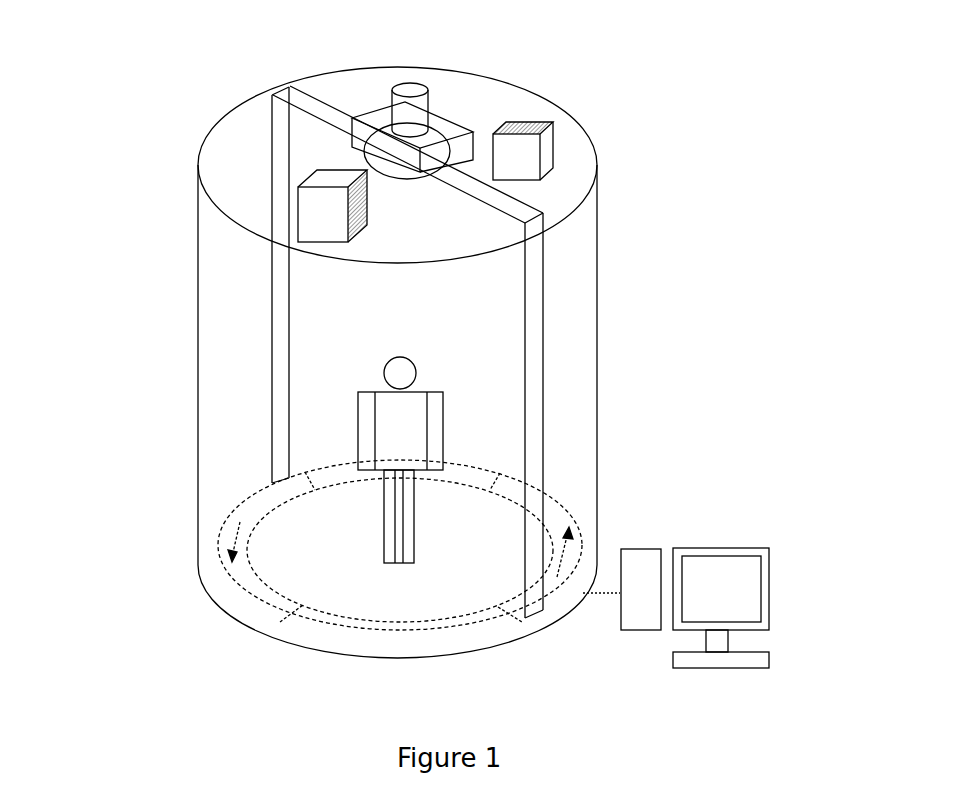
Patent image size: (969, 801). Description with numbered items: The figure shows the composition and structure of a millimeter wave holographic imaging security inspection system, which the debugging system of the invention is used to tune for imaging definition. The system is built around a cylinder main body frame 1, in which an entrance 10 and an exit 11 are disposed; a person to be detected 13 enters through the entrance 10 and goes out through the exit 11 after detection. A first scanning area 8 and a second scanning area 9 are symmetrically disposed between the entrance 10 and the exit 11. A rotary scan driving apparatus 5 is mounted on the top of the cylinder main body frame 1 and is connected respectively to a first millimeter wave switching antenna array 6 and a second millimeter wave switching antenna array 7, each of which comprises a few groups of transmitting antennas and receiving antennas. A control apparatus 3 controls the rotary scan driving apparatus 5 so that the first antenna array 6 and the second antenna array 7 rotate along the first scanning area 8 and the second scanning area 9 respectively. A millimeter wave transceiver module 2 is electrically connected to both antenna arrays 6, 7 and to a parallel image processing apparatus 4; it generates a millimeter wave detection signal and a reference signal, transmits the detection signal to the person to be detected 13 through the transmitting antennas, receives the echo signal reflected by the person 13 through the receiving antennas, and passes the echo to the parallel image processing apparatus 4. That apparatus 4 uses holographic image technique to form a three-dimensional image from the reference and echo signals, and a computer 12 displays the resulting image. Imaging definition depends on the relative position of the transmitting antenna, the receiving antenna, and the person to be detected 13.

The cylinder main body frame 1 is at (318, 362).
The millimeter wave transceiver module 2 is at (345, 114).
The control apparatus 3 is at (567, 135).
The parallel image processing apparatus 4 is at (222, 173).
The rotary scan driving apparatus 5 is at (462, 79).
The first millimeter wave switching antenna array 6 is at (184, 285).
The second millimeter wave switching antenna array 7 is at (620, 415).
The first scanning area 8 is at (336, 545).
The second scanning area 9 is at (460, 545).
The entrance 10 is at (320, 671).
The exit 11 is at (560, 402).
The computer 12 is at (711, 601).
The person to be detected 13 is at (561, 318).